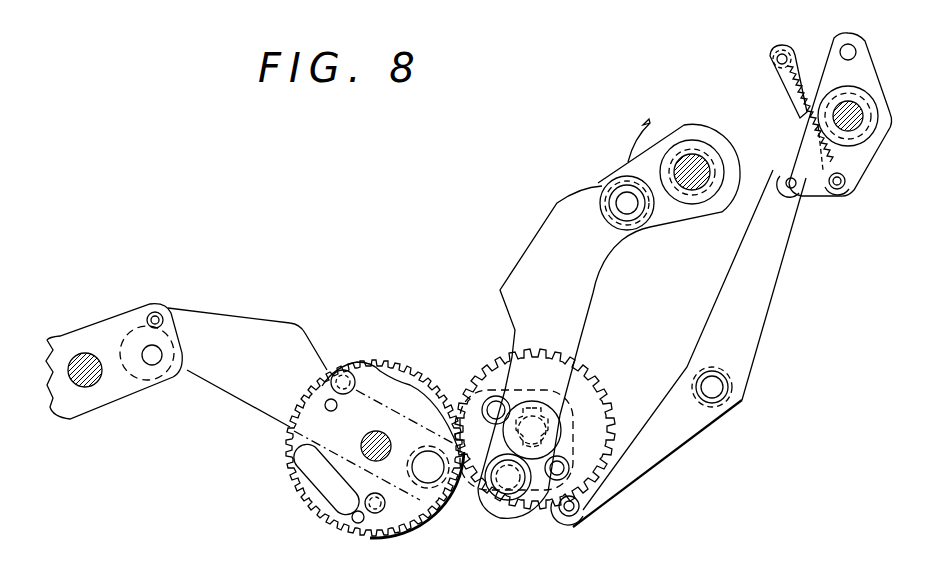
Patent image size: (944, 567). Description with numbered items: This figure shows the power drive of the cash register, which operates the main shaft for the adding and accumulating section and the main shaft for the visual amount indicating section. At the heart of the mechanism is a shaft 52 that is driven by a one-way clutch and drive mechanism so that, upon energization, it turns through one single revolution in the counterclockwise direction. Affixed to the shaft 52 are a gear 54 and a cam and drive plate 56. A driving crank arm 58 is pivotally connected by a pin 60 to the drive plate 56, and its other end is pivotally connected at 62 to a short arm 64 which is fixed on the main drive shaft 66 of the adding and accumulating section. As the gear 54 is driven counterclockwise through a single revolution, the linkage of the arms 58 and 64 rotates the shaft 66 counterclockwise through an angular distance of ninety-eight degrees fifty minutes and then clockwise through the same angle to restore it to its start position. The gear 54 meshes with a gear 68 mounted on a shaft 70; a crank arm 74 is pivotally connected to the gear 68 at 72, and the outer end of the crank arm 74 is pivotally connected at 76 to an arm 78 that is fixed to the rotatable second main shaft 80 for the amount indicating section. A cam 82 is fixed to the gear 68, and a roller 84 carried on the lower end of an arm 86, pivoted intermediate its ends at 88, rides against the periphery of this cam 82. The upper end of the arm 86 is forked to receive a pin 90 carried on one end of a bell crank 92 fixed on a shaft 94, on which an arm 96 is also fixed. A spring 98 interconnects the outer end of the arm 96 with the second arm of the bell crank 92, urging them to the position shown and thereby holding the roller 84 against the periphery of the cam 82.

The shaft 52 is at (366, 436).
The gear 54 is at (400, 370).
The cam and drive plate 56 is at (356, 528).
The driving crank arm 58 is at (245, 327).
The pin 60 is at (427, 482).
The pivotal connection 62 is at (157, 360).
The short arm 64 is at (98, 327).
The main drive shaft 66 is at (88, 387).
The gear 68 is at (611, 404).
The shaft 70 is at (548, 416).
The pivotal connection 72 is at (507, 488).
The crank arm 74 is at (535, 258).
The pivotal connection 76 is at (613, 197).
The arm 78 is at (675, 213).
The second main shaft 80 is at (692, 163).
The cam 82 is at (486, 396).
The roller 84 is at (575, 520).
The arm 86 is at (755, 343).
The pivot 88 is at (716, 398).
The pin 90 is at (797, 185).
The bell crank 92 is at (803, 150).
The shaft 94 is at (846, 116).
The arm 96 is at (852, 184).
The spring 98 is at (772, 81).